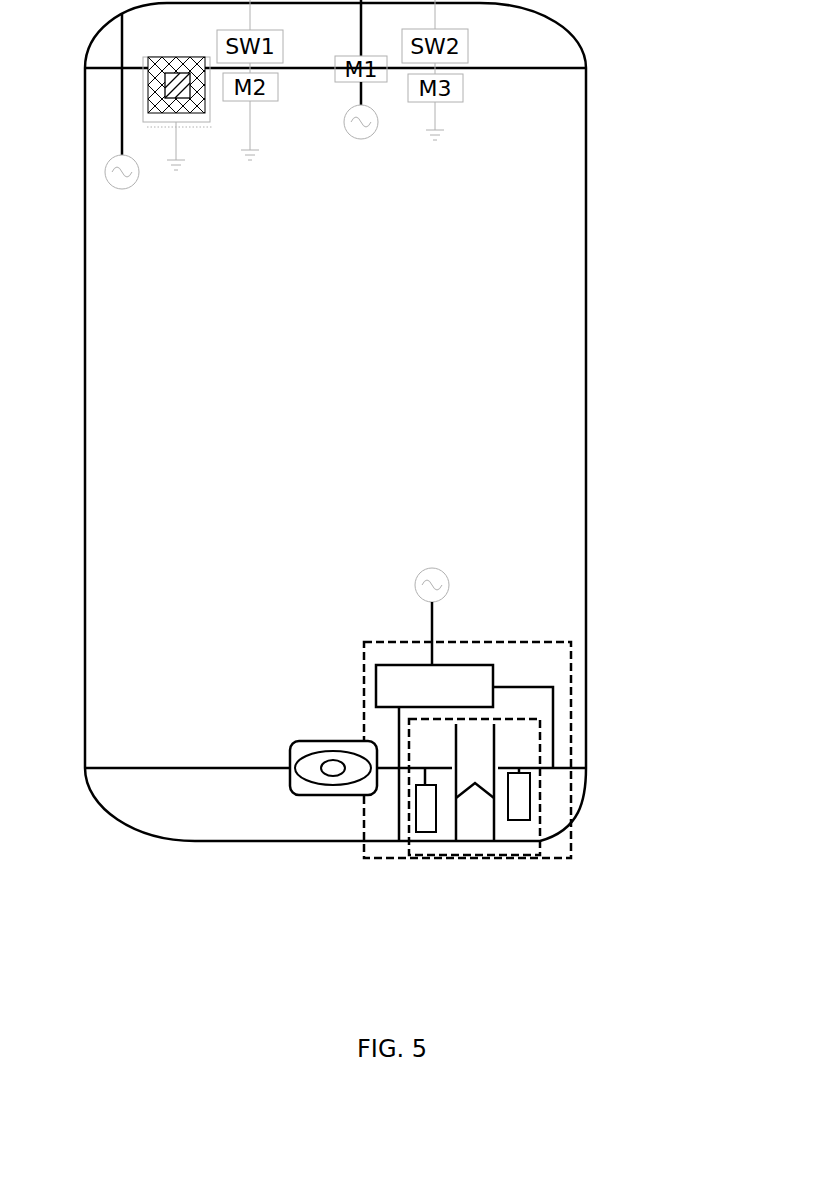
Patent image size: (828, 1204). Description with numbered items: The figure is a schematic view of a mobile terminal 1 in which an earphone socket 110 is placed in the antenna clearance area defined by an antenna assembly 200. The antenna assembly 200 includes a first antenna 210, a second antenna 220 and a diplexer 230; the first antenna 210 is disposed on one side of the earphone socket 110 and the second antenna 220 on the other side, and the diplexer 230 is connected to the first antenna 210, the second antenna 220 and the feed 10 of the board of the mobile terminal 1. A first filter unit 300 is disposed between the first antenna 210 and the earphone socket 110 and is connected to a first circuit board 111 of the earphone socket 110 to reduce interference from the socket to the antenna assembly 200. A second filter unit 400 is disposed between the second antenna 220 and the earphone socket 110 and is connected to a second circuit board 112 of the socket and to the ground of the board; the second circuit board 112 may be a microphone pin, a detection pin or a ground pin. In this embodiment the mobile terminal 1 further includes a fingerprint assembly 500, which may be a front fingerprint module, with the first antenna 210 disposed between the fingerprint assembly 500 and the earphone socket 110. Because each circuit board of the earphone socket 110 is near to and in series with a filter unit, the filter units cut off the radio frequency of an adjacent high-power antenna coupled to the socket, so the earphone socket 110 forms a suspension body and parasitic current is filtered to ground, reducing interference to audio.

The mobile terminal 1 is at (586, 192).
The feed 10 is at (432, 568).
The earphone socket 110 is at (482, 820).
The first circuit board 111 is at (425, 768).
The second circuit board 112 is at (520, 767).
The antenna assembly 200 is at (408, 642).
The first antenna 210 is at (399, 775).
The second antenna 220 is at (532, 686).
The diplexer 230 is at (376, 683).
The first filter unit 300 is at (436, 832).
The second filter unit 400 is at (520, 820).
The fingerprint assembly 500 is at (293, 795).